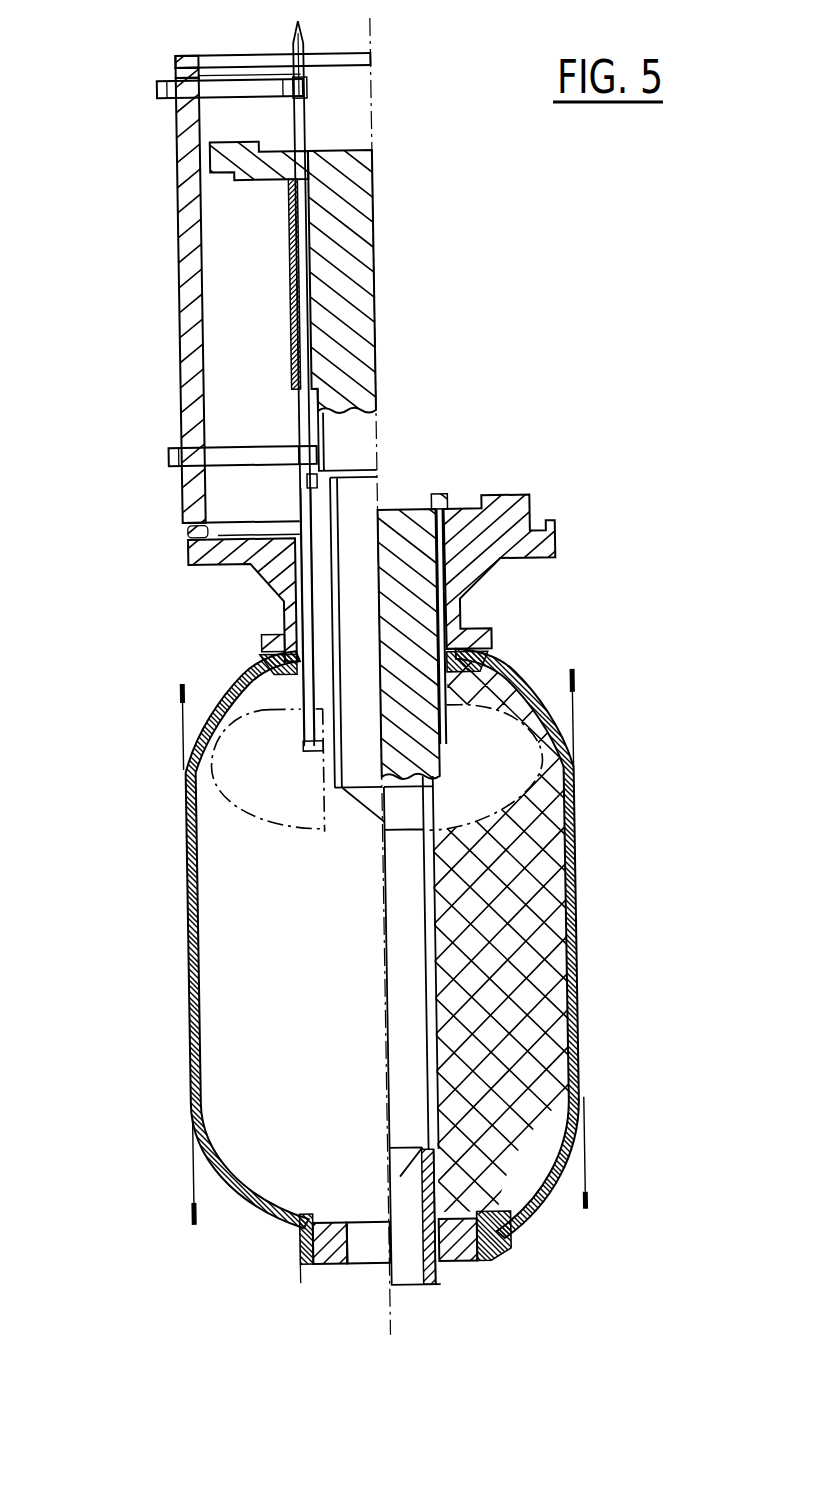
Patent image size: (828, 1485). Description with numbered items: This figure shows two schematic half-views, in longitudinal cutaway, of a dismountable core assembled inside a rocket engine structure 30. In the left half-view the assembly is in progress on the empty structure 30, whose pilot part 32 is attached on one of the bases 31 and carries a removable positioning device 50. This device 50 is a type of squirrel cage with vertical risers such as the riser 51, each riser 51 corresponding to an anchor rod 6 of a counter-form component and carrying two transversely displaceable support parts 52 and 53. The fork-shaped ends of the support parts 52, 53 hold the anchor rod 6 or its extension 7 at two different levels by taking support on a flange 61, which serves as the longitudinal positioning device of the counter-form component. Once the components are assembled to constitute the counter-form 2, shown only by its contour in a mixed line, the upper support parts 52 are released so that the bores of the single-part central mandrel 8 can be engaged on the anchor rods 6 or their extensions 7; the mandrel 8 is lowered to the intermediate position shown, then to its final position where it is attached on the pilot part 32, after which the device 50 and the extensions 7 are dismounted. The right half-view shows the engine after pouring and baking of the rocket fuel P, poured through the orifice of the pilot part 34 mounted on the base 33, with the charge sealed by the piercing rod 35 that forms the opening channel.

The counter-form 2 is at (236, 751).
The anchor rod 6 is at (272, 584).
The extension of the anchor rod 7 is at (299, 237).
The central mandrel 8 is at (348, 367).
The structure 30 is at (174, 902).
The base 31 is at (460, 664).
The pilot part 32 is at (547, 551).
The base 33 is at (486, 1232).
The pilot part 34 is at (439, 1241).
The piercing rod 35 is at (418, 1286).
The removable positioning device 50 is at (150, 195).
The riser 51 is at (179, 297).
The support part 52 is at (158, 78).
The support part 53 is at (158, 454).
The flange 61 is at (310, 449).
The rocket fuel P is at (531, 921).